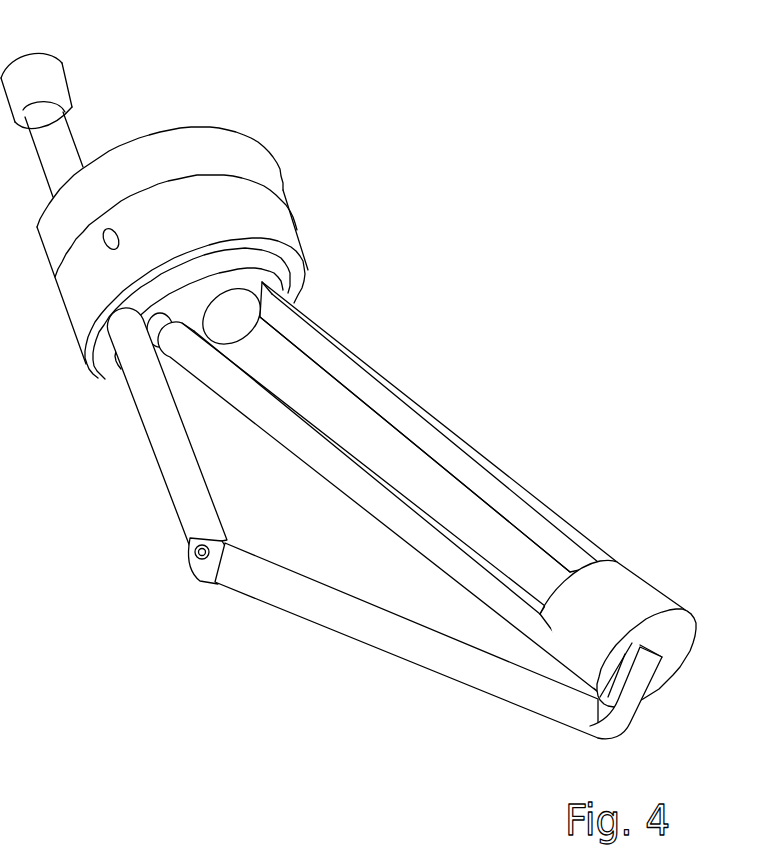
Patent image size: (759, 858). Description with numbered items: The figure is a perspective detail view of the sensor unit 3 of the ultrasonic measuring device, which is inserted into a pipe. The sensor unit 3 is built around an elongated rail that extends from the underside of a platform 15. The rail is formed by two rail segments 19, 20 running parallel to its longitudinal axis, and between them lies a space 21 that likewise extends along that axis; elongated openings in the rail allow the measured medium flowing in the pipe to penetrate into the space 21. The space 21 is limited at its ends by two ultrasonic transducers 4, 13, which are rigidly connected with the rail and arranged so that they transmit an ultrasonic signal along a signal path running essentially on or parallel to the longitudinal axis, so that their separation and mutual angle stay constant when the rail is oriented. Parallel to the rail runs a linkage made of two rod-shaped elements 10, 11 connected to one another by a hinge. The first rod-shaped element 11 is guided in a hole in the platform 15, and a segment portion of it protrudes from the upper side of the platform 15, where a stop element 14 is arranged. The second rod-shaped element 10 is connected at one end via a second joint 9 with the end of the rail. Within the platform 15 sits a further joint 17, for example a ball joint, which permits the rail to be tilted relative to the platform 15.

The sensor unit 3 is at (471, 427).
The ultrasonic transducer 4 is at (620, 600).
The second joint 9 is at (623, 723).
The rod-shaped element 10 is at (362, 628).
The rod-shaped element 11 is at (67, 145).
The ultrasonic transducer 13 is at (230, 313).
The stop element 14 is at (47, 73).
The platform 15 is at (250, 160).
The joint 17 is at (147, 318).
The rail segment 19 is at (517, 488).
The rail segment 20 is at (403, 507).
The space 21 is at (380, 430).